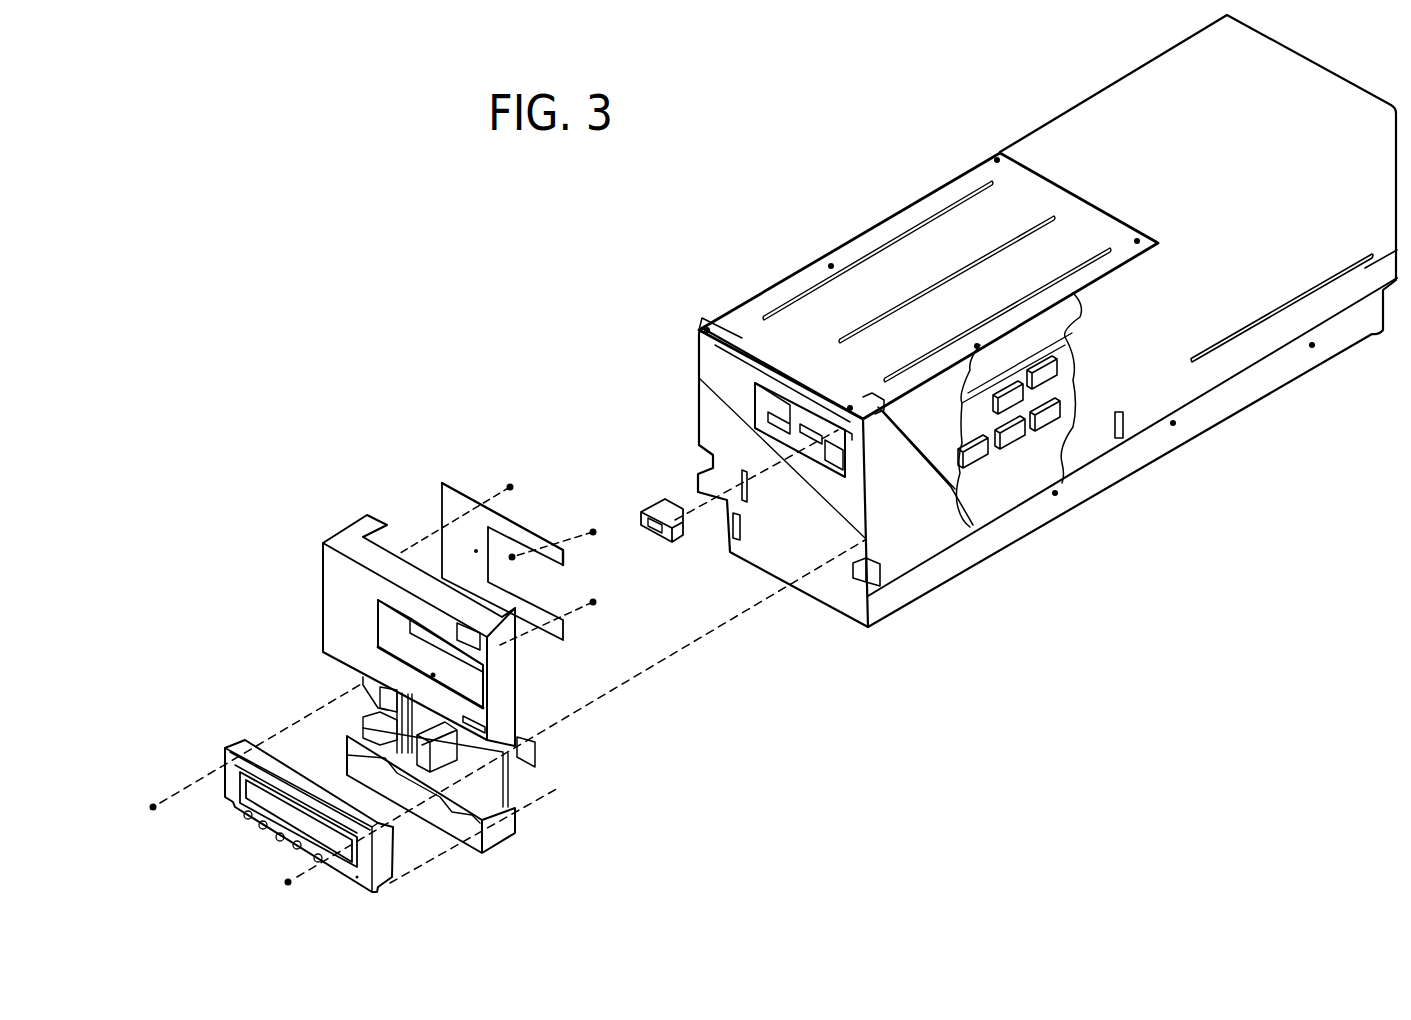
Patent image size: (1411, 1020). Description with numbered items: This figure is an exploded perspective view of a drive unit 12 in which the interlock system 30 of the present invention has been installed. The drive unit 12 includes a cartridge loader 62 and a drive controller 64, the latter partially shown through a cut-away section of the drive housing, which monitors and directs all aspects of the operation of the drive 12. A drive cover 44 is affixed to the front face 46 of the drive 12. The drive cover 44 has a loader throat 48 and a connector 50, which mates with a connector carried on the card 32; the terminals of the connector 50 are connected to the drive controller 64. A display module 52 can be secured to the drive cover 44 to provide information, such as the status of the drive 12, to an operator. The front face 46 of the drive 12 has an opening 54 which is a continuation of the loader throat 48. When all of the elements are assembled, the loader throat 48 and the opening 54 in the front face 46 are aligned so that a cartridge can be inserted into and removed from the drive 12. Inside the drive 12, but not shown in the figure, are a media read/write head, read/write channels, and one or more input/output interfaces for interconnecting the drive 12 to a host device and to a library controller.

The drive unit 12 is at (1160, 458).
The interlock system 30 is at (402, 496).
The card 32 is at (458, 492).
The drive cover 44 is at (335, 563).
The front face 46 is at (710, 352).
The loader throat 48 is at (392, 627).
The connector 50 is at (641, 510).
The display module 52 is at (227, 752).
The opening 54 is at (841, 478).
The cartridge loader 62 is at (757, 415).
The drive controller 64 is at (1003, 487).